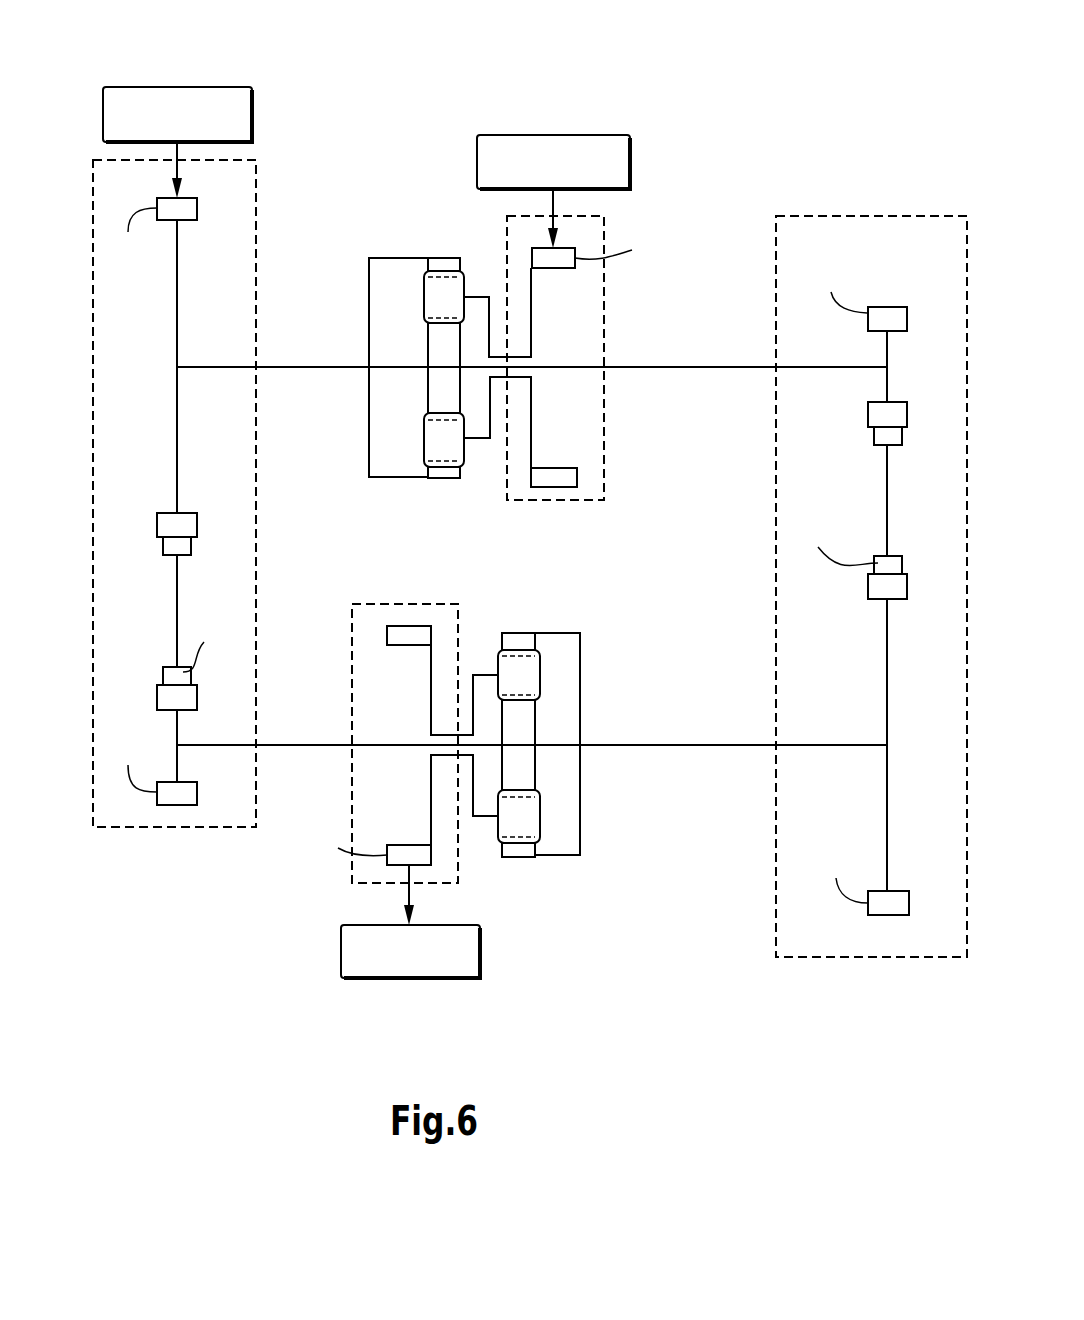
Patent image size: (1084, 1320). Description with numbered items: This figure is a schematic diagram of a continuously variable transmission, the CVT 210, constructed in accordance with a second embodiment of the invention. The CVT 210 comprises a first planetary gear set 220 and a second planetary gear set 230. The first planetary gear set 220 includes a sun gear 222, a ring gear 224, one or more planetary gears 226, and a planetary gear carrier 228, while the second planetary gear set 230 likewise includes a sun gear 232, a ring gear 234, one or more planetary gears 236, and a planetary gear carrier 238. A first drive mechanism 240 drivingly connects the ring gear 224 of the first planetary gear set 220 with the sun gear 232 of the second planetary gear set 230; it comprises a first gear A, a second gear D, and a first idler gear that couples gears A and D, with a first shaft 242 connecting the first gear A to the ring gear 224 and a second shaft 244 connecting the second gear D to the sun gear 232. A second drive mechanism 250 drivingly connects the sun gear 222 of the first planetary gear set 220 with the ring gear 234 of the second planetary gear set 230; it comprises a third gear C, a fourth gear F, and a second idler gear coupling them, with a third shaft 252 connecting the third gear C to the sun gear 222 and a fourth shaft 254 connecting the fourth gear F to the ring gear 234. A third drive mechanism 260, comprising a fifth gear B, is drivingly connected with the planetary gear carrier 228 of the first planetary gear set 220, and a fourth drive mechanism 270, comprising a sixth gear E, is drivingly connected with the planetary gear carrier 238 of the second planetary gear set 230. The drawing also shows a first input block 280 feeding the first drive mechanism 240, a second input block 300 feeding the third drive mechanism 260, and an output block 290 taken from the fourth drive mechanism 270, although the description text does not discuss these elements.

The CVT 210 is at (535, 72).
The first planetary gear set 220 is at (461, 379).
The sun gear 222 is at (438, 371).
The ring gear 224 is at (443, 480).
The planetary gears 226 is at (433, 440).
The planetary gear carrier 228 is at (480, 441).
The second planetary gear set 230 is at (545, 824).
The sun gear 232 is at (522, 746).
The ring gear 234 is at (522, 860).
The planetary gears 236 is at (527, 815).
The planetary gear carrier 238 is at (487, 818).
The first drive mechanism 240 is at (256, 188).
The first shaft 242 is at (200, 367).
The second shaft 244 is at (223, 745).
The second drive mechanism 250 is at (876, 216).
The third shaft 252 is at (640, 367).
The fourth shaft 254 is at (665, 746).
The third drive mechanism 260 is at (604, 455).
The fourth drive mechanism 270 is at (458, 613).
The first input 280 is at (200, 87).
The output 290 is at (428, 978).
The second input 300 is at (528, 135).